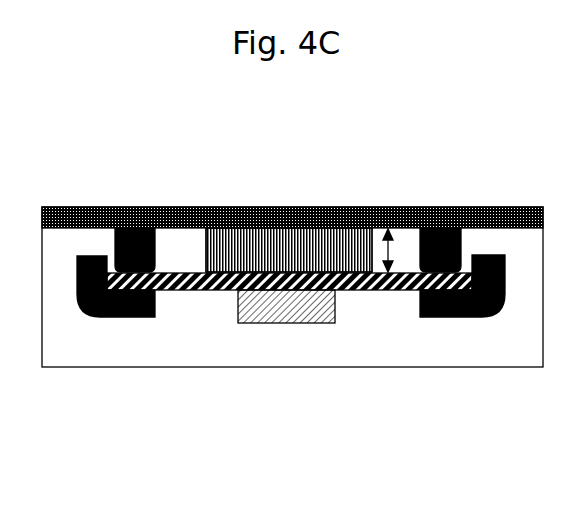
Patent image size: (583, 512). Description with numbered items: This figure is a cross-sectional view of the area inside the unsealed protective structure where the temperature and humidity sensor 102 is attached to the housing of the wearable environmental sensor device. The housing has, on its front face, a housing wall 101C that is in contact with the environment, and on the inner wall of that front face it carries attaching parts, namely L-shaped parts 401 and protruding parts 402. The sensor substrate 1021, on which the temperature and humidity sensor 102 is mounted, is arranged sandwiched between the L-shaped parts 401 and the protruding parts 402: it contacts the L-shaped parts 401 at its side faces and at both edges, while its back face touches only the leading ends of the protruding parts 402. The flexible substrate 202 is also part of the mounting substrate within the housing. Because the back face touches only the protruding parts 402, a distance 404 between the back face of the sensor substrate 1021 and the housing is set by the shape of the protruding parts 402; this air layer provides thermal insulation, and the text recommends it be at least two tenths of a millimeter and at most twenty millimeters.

The housing wall 101C is at (103, 207).
The protruding parts 402 is at (145, 207).
The sensor substrate 1021 is at (237, 232).
The flexible substrate 202 is at (290, 203).
The distance 404 is at (391, 236).
The temperature and humidity sensor 102 is at (250, 322).
The L-shaped parts 401 is at (122, 316).